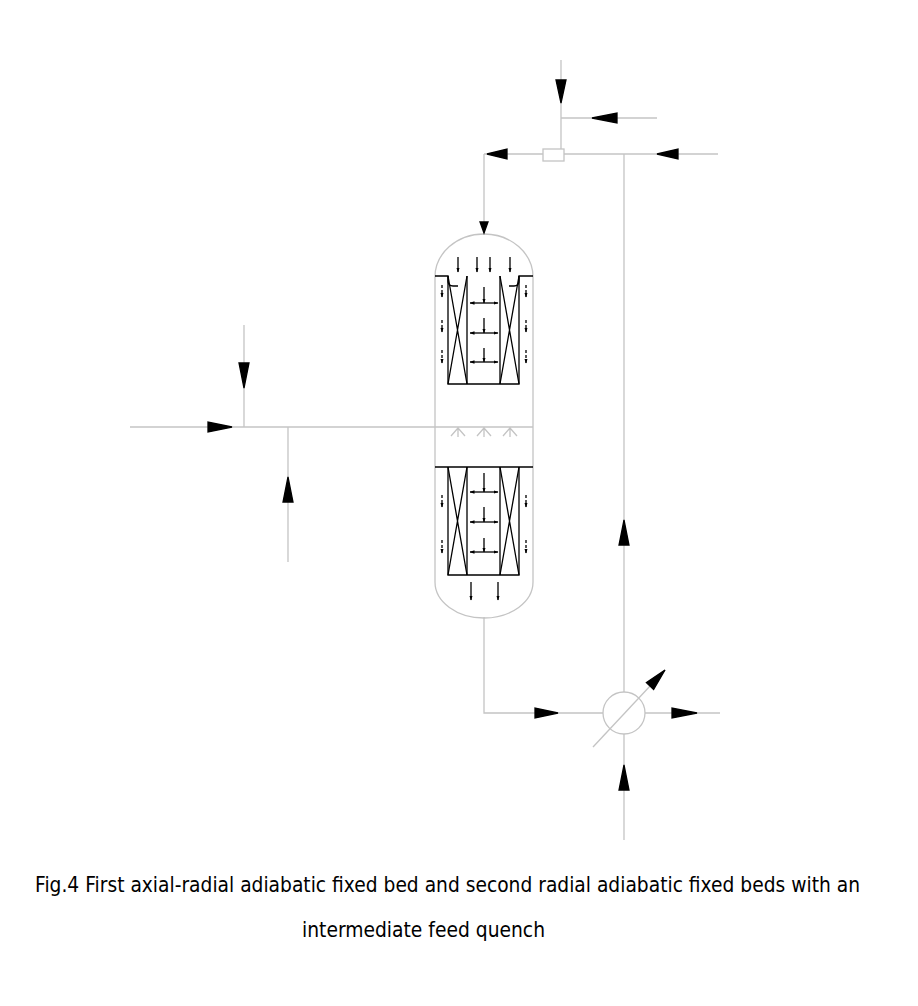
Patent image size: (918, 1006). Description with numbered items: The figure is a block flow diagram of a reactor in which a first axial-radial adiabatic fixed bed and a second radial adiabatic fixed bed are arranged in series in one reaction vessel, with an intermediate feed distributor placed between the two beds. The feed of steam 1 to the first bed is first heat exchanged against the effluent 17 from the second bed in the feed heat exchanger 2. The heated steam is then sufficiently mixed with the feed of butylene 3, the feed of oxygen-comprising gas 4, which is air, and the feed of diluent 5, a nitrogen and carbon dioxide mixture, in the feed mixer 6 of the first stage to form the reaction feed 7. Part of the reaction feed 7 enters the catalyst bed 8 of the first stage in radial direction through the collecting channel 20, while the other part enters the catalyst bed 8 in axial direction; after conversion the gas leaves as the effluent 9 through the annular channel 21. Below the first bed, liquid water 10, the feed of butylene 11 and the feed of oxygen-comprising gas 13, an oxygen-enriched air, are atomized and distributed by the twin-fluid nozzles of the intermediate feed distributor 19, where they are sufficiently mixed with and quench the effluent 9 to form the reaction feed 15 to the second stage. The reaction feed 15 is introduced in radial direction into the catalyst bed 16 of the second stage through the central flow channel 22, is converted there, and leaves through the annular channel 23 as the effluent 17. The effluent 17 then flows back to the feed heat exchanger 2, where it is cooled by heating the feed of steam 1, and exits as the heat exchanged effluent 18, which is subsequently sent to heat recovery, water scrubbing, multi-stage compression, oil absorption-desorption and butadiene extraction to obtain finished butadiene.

The feed of steam 1 is at (624, 800).
The feed heat exchanger 2 is at (632, 690).
The feed of butylene 3 is at (716, 154).
The feed of oxygen-comprising gas 4 is at (630, 118).
The feed of diluent 5 is at (562, 83).
The feed mixer 6 is at (545, 149).
The reaction feed 7 is at (484, 192).
The catalyst bed 8 is at (513, 328).
The effluent 9 is at (478, 403).
The liquid water 10 is at (182, 428).
The feed of butylene 11 is at (244, 363).
The feed of oxygen-comprising gas 13 is at (288, 533).
The reaction feed 15 is at (478, 452).
The catalyst bed 16 is at (513, 525).
The effluent 17 is at (484, 667).
The heat exchanged effluent 18 is at (695, 713).
The intermediate feed distributor 19 is at (436, 419).
The collecting channel 20 is at (484, 290).
The annular channel 21 is at (530, 352).
The central flow channel 22 is at (484, 478).
The annular channel 23 is at (527, 530).